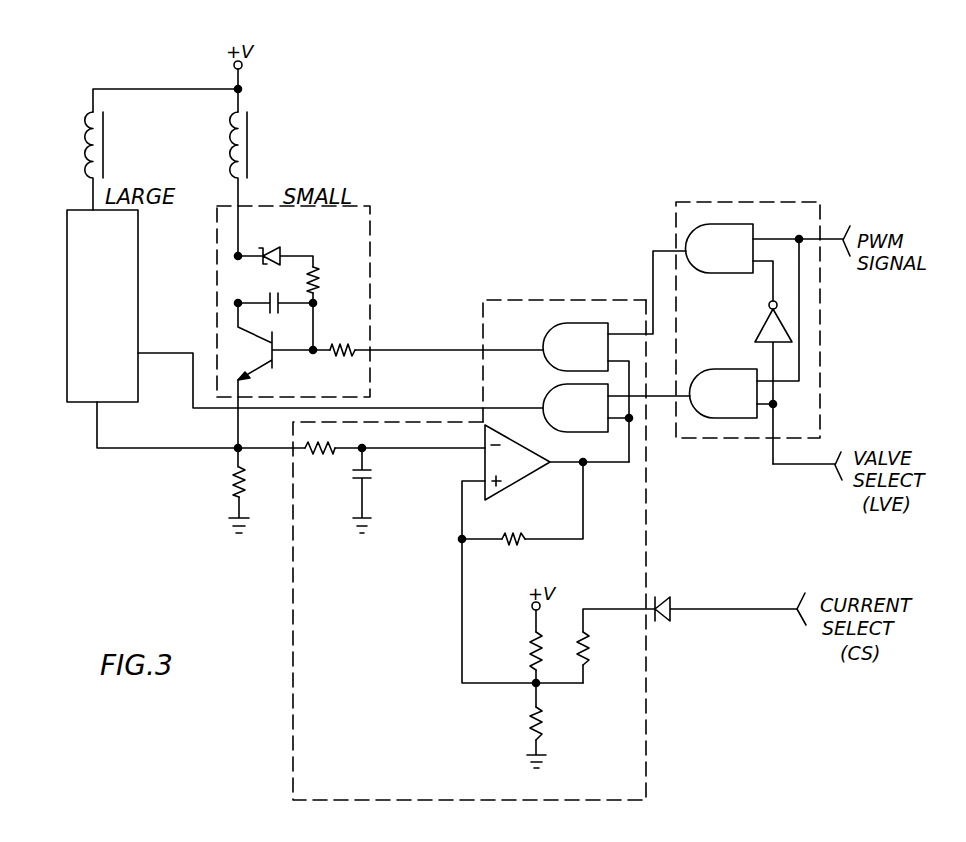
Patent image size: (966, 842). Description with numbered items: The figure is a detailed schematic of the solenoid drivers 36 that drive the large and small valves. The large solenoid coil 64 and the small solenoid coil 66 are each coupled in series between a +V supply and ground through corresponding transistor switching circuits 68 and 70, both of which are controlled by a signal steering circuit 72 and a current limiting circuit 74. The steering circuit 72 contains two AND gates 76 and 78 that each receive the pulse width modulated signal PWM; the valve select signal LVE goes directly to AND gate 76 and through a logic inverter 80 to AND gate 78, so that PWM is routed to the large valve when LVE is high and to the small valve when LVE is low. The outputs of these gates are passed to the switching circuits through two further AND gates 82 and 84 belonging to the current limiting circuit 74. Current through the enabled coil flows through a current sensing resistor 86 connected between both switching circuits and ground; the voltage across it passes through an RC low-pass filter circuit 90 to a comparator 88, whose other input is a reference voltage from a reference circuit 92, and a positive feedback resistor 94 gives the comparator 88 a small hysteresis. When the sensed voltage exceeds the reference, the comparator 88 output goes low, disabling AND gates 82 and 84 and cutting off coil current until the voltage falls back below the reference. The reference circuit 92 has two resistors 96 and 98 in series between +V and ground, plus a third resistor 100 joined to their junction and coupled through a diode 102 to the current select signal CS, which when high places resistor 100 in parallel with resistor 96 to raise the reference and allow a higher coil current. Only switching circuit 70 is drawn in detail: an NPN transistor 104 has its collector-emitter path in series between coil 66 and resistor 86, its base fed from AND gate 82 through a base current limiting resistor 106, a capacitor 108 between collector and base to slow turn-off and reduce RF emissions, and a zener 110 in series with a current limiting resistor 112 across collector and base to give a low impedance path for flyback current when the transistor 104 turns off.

The solenoid drivers 36 is at (510, 158).
The large solenoid coil 64 is at (103, 139).
The small solenoid coil 66 is at (247, 139).
The transistor switching circuit 68 is at (138, 262).
The transistor switching circuit 70 is at (372, 212).
The signal steering circuit 72 is at (722, 202).
The current limiting circuit 74 is at (530, 300).
The AND gate 76 is at (736, 412).
The AND gate 78 is at (732, 267).
The logic inverter 80 is at (759, 325).
The AND gate 82 is at (585, 362).
The AND gate 84 is at (585, 423).
The current sensing resistor 86 is at (228, 487).
The comparator 88 is at (557, 462).
The RC low-pass filter circuit 90 is at (355, 451).
The reference circuit 92 is at (450, 695).
The positive feedback resistor 94 is at (520, 531).
The resistor 96 is at (525, 646).
The resistor 98 is at (545, 718).
The resistor 100 is at (590, 637).
The diode 102 is at (672, 596).
The NPN transistor 104 is at (274, 370).
The base current limiting resistor 106 is at (342, 336).
The capacitor 108 is at (268, 313).
The zener 110 is at (283, 249).
The current limiting resistor 112 is at (320, 276).